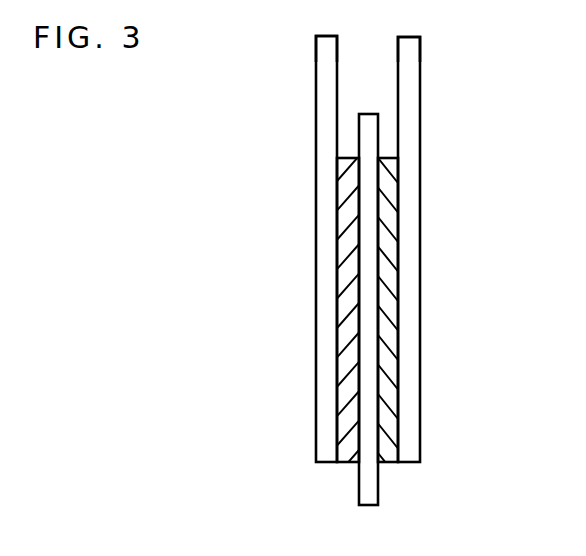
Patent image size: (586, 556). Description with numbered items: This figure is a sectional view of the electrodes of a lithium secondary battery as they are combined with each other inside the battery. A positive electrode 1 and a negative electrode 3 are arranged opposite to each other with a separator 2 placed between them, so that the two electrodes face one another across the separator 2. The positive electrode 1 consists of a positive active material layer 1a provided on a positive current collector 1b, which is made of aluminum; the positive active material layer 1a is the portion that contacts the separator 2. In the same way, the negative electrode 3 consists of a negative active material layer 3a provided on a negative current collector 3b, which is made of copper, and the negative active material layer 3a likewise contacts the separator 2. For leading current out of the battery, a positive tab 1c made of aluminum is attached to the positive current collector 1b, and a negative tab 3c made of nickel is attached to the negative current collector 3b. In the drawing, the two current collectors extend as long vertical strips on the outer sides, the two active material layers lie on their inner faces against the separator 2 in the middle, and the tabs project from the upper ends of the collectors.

The positive electrode 1 is at (293, 261).
The positive active material layer 1a is at (348, 452).
The positive current collector 1b is at (329, 336).
The positive tab 1c is at (327, 40).
The separator 2 is at (366, 118).
The negative electrode 3 is at (445, 272).
The negative active material layer 3a is at (387, 450).
The negative current collector 3b is at (412, 336).
The negative tab 3c is at (406, 40).